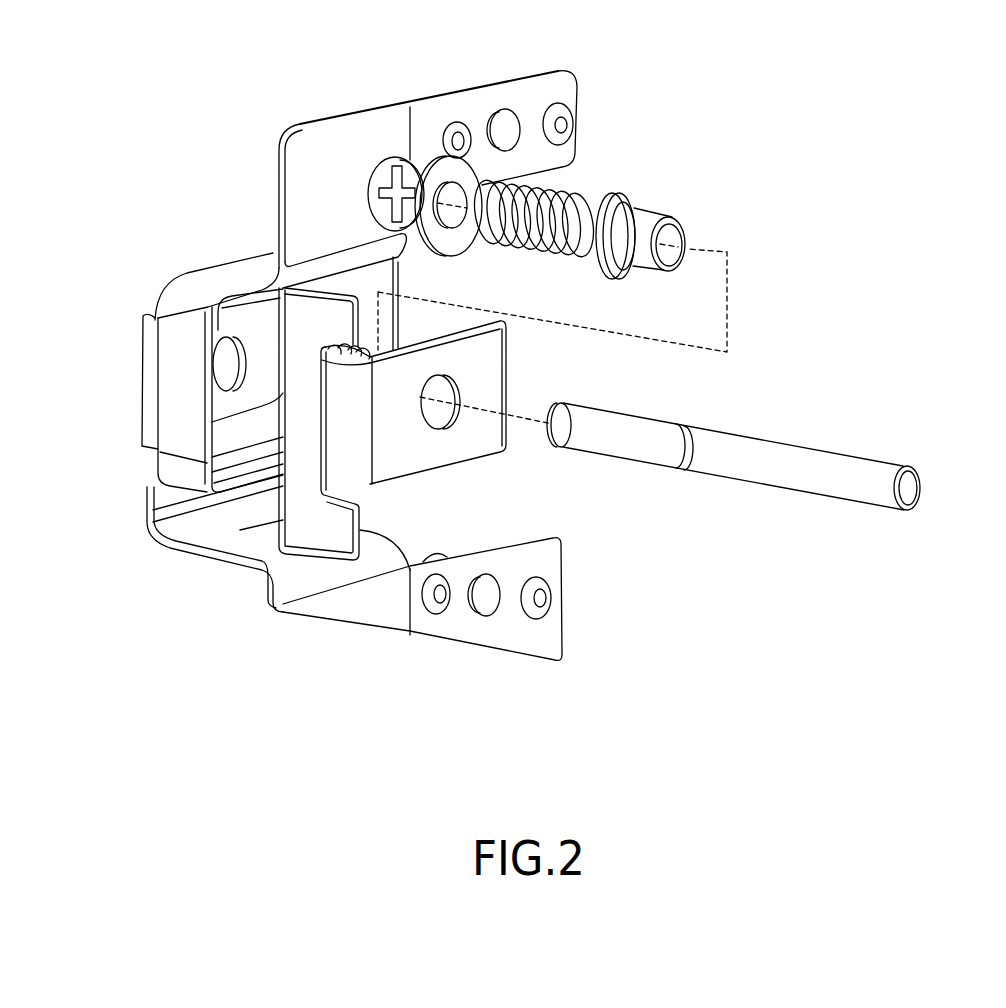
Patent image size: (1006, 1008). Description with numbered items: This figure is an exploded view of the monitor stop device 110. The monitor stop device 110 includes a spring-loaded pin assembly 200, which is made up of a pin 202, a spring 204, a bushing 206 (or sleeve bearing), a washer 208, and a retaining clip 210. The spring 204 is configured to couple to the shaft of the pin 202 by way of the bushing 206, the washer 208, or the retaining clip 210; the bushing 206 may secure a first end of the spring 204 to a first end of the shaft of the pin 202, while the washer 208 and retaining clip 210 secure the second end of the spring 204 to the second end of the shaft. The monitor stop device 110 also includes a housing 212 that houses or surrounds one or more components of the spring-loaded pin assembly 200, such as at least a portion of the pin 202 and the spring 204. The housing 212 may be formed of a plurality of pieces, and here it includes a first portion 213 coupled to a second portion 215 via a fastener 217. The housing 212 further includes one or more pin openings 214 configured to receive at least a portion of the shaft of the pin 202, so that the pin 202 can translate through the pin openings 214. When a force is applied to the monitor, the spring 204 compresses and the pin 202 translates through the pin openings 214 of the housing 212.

The monitor stop device 110 is at (167, 104).
The spring-loaded pin assembly 200 is at (881, 316).
The pin 202 is at (868, 470).
The spring 204 is at (580, 195).
The bushing 206 is at (680, 215).
The washer 208 is at (440, 143).
The retaining clip 210 is at (392, 158).
The housing 212 is at (125, 332).
The first portion 213 is at (325, 138).
The pin openings 214 is at (222, 340).
The second portion 215 is at (490, 373).
The fastener 217 is at (362, 356).